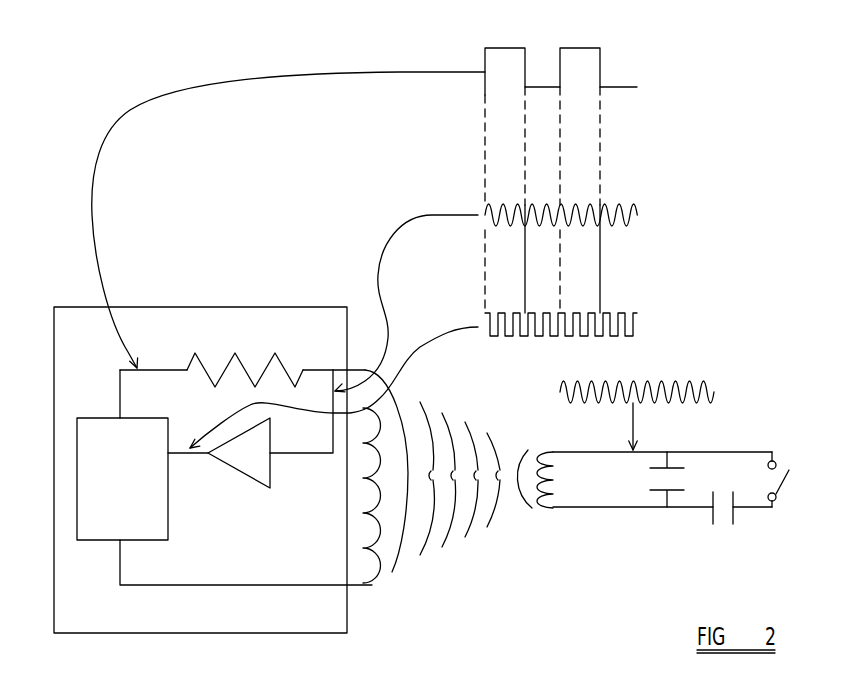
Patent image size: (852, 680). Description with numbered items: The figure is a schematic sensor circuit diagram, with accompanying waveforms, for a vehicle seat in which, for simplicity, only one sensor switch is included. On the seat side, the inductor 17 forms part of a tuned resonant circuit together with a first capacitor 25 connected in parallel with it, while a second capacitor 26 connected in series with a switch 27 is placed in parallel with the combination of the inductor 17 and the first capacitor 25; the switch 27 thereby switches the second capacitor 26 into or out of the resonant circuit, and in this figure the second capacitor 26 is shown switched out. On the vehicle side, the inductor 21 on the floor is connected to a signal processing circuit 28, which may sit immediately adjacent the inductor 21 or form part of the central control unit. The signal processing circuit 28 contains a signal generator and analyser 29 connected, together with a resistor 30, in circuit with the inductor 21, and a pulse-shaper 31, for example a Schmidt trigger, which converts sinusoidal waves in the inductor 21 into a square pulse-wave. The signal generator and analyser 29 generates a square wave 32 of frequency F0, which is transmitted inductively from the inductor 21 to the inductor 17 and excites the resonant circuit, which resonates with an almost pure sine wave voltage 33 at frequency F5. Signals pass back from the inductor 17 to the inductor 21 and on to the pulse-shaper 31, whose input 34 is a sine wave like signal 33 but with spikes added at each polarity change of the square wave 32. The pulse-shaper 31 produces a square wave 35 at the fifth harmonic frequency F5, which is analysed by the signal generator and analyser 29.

The inductor 17 is at (550, 512).
The inductor 21 is at (375, 585).
The first capacitor 25 is at (662, 500).
The second capacitor 26 is at (755, 509).
The switch 27 is at (789, 478).
The signal processing circuit 28 is at (348, 623).
The signal generator and analyser 29 is at (104, 437).
The resistor 30 is at (213, 385).
The pulse-shaper 31 is at (243, 474).
The square wave 32 is at (600, 66).
The voltage frequency signal 33 is at (713, 392).
The input 34 is at (637, 216).
The square wave 35 is at (637, 328).